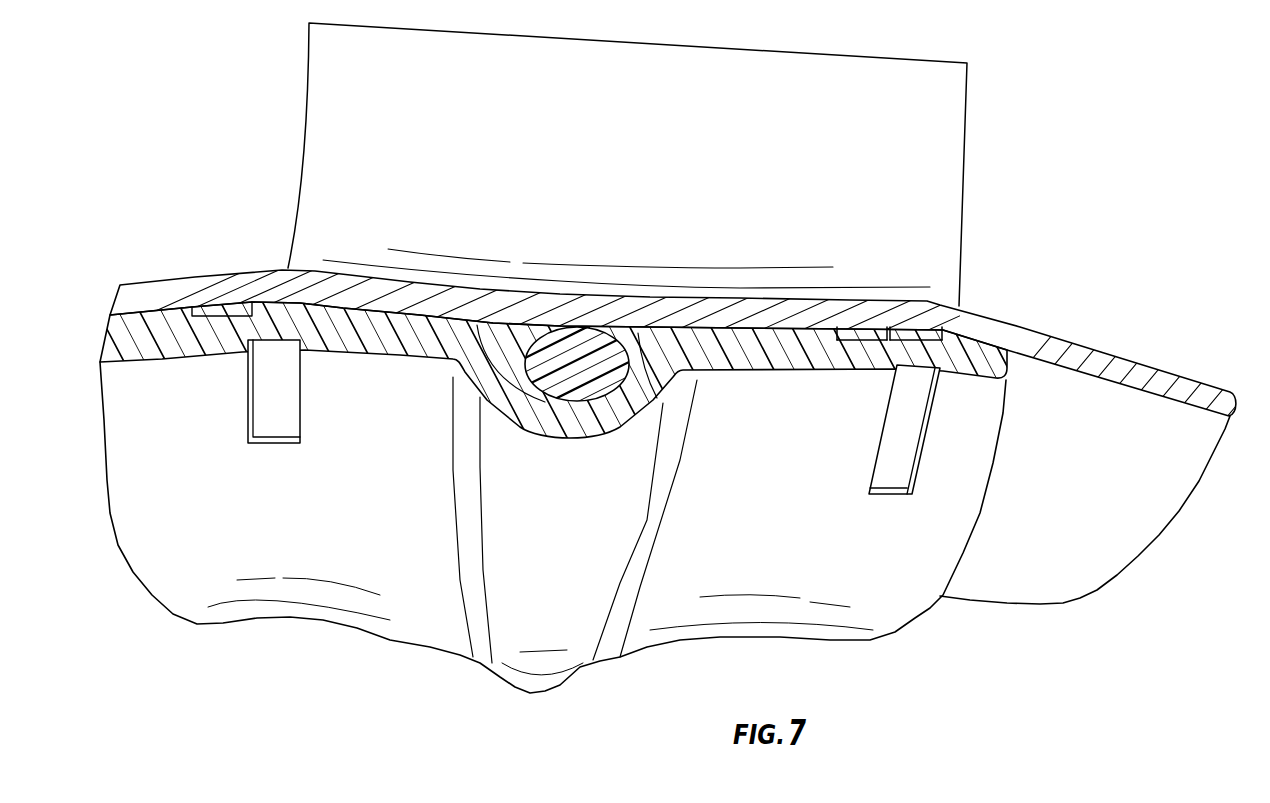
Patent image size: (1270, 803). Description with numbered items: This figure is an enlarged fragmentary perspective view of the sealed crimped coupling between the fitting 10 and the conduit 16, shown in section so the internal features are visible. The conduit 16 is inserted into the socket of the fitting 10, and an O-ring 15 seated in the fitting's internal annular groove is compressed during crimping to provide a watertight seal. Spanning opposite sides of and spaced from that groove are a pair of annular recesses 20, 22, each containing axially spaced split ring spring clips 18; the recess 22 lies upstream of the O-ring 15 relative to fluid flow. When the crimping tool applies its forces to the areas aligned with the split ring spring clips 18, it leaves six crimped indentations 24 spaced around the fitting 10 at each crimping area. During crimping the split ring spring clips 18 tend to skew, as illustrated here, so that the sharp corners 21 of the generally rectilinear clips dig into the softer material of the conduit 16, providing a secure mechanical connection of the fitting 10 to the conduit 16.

The fitting 10 is at (302, 580).
The O-ring 15 is at (571, 352).
The conduit 16 is at (215, 283).
The split ring spring clips 18 is at (918, 340).
The annular recess 20 is at (232, 312).
The sharp corners 21 is at (940, 327).
The annular recess 22 is at (867, 348).
The crimped indentations 24 is at (893, 473).